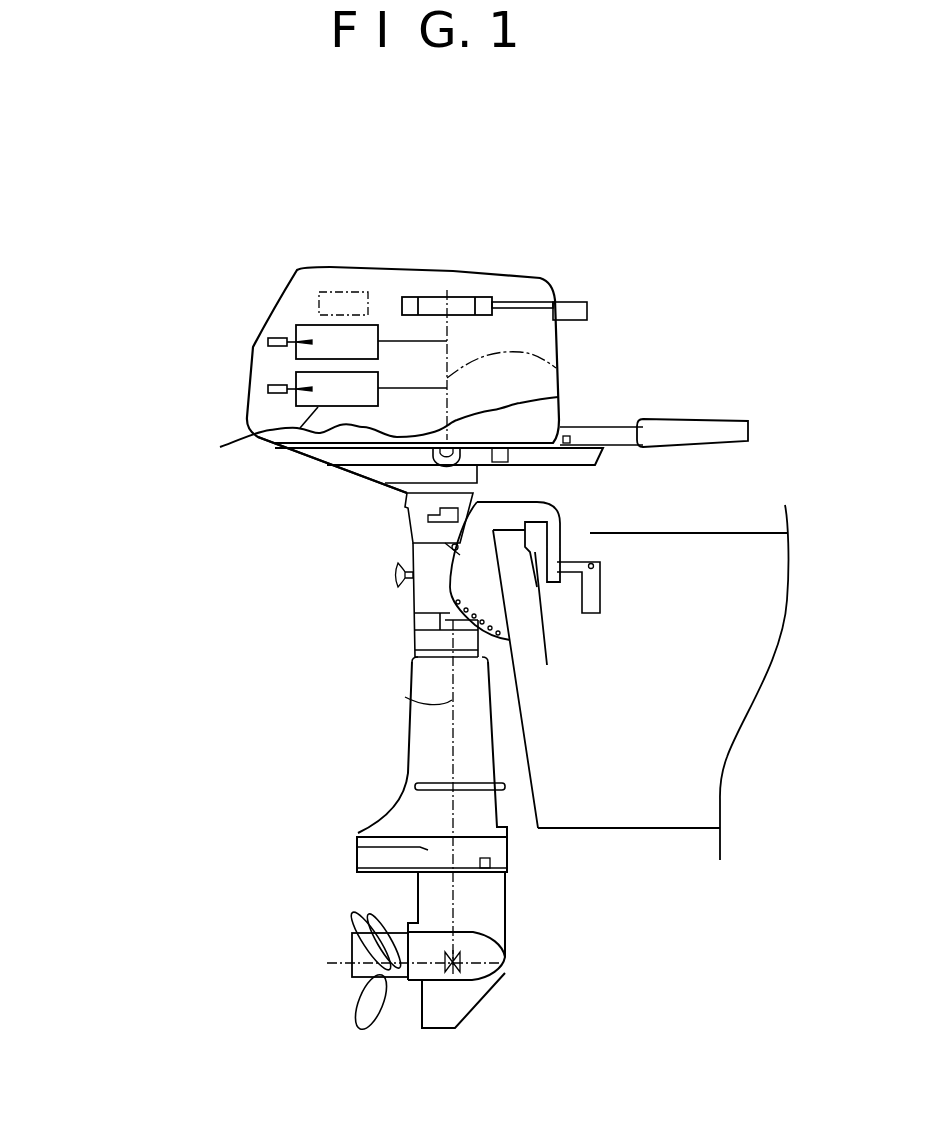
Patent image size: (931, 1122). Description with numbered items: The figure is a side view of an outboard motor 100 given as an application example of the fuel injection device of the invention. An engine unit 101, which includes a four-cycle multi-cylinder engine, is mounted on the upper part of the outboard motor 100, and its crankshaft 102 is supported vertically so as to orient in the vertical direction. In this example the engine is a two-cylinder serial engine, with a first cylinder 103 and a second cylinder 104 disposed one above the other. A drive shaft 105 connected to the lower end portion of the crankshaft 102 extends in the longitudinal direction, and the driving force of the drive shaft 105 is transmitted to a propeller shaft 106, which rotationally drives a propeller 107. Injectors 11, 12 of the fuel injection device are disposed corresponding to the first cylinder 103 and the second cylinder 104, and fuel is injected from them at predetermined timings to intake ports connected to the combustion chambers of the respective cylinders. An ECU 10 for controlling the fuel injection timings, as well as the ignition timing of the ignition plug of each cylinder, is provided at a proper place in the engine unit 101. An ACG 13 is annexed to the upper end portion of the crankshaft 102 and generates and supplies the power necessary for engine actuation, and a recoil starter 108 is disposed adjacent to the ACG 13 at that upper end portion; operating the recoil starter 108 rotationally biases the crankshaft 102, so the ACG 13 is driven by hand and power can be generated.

The outboard motor 100 is at (294, 212).
The ECU (engine control unit) 10 is at (360, 290).
The ACG 13 is at (463, 297).
The recoil starter 108 is at (498, 302).
The #1 cylinder 103 is at (305, 325).
The crankshaft 102 is at (555, 368).
The #2 cylinder 104 is at (273, 448).
The engine unit 101 is at (150, 267).
The injector 11 is at (268, 339).
The injector 12 is at (268, 392).
The drive shaft 105 is at (405, 697).
The propeller shaft 106 is at (403, 963).
The propeller 107 is at (352, 1000).